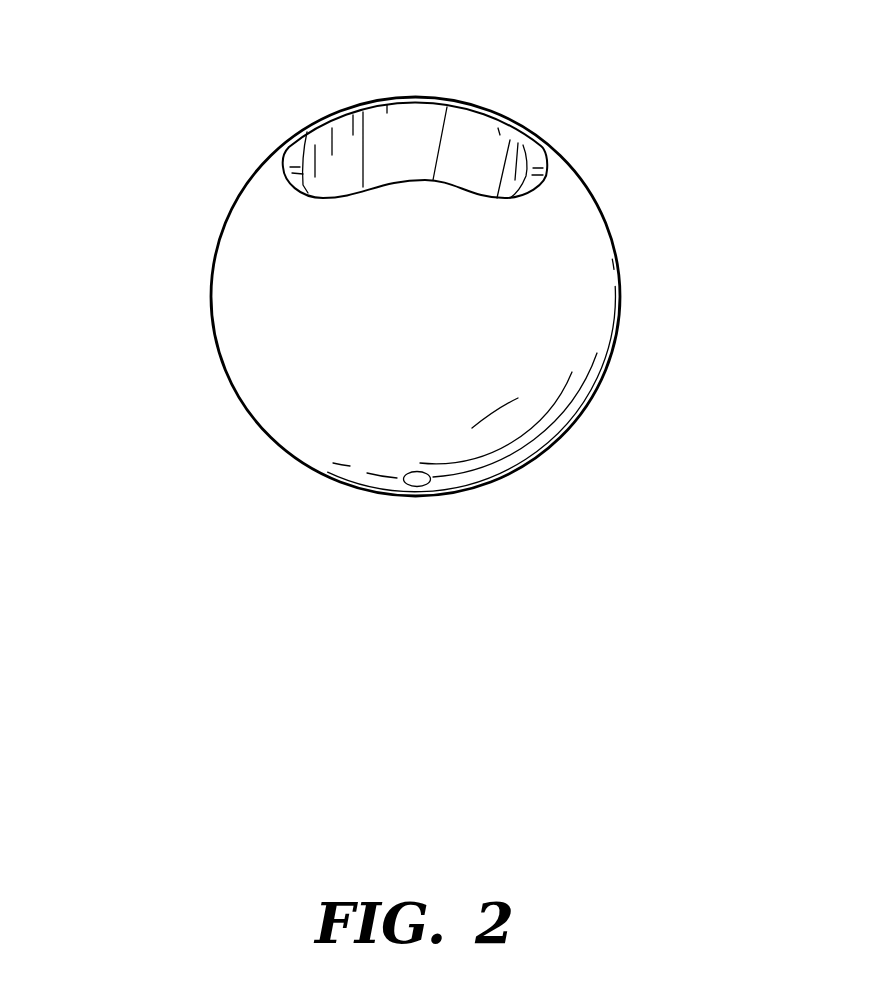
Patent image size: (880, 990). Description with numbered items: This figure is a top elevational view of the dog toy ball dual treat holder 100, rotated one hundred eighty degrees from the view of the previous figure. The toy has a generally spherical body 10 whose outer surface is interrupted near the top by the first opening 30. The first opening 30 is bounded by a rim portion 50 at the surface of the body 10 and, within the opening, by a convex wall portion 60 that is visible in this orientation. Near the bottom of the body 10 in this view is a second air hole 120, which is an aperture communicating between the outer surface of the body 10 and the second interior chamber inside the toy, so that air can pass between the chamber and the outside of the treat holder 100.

The dog toy ball dual treat holder 100 is at (176, 74).
The body 10 is at (620, 318).
The first opening 30 is at (484, 182).
The rim portion 50 is at (303, 160).
The convex wall portion 60 is at (375, 128).
The second air hole 120 is at (396, 498).